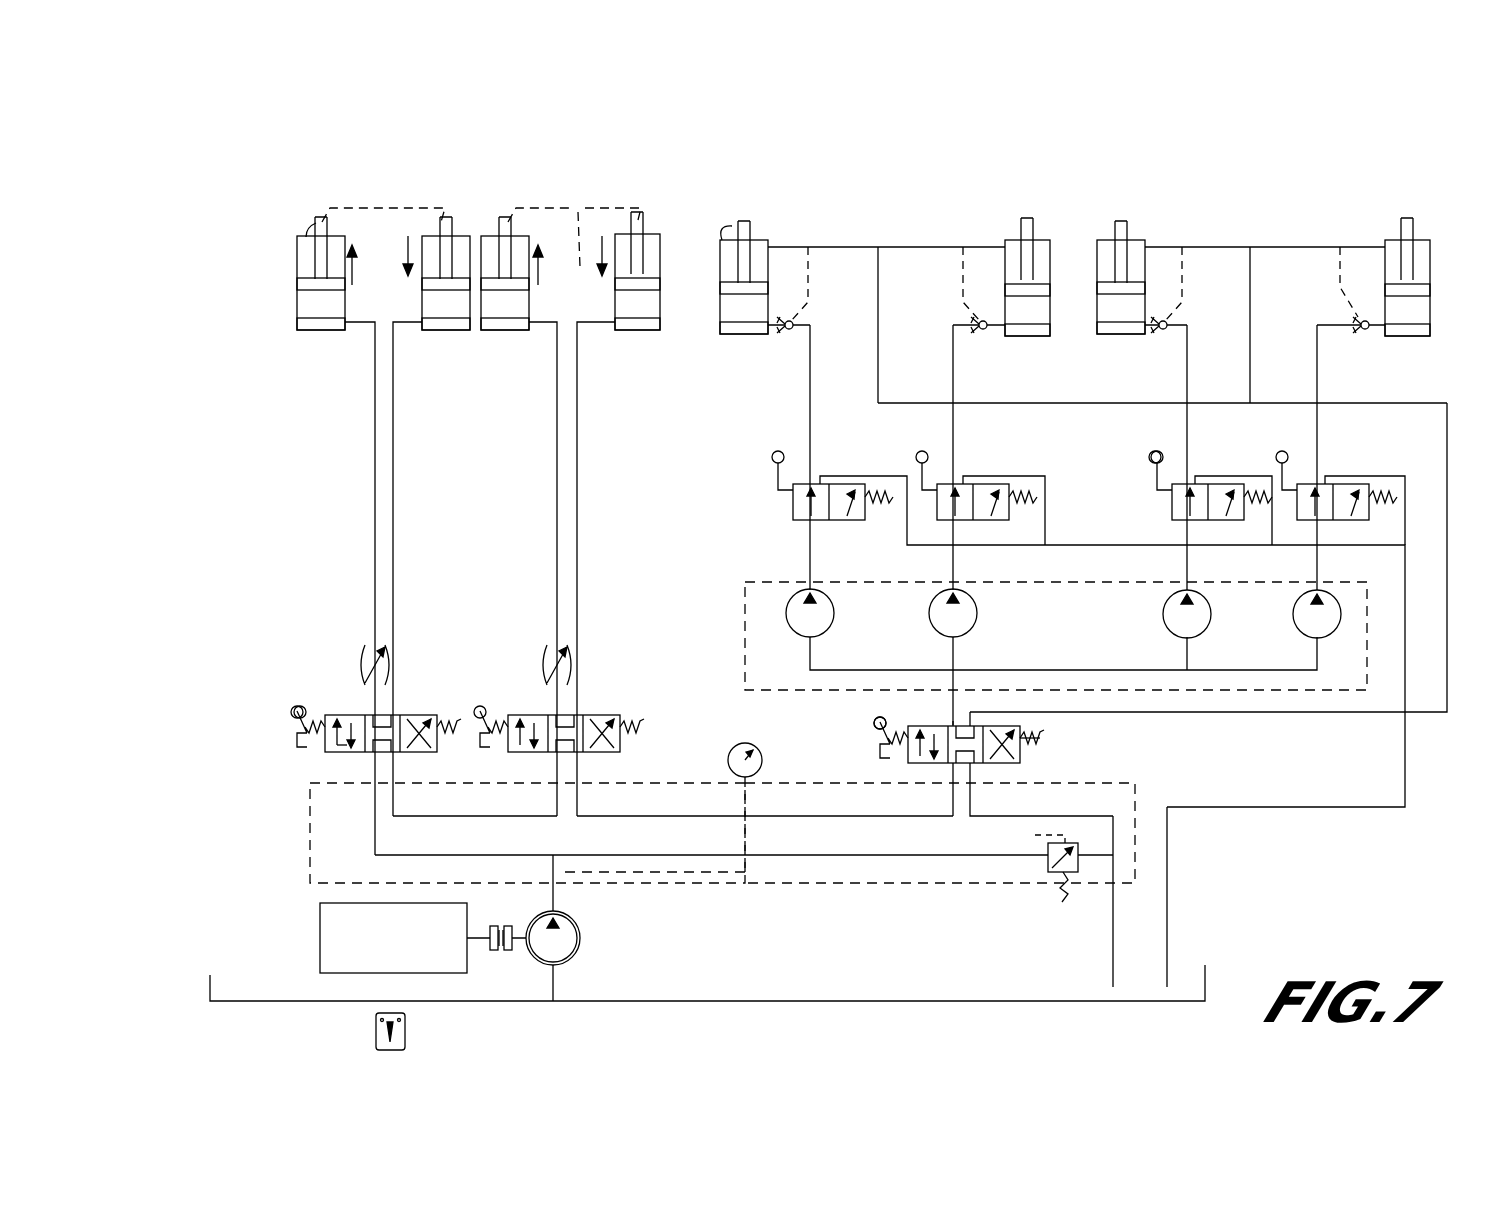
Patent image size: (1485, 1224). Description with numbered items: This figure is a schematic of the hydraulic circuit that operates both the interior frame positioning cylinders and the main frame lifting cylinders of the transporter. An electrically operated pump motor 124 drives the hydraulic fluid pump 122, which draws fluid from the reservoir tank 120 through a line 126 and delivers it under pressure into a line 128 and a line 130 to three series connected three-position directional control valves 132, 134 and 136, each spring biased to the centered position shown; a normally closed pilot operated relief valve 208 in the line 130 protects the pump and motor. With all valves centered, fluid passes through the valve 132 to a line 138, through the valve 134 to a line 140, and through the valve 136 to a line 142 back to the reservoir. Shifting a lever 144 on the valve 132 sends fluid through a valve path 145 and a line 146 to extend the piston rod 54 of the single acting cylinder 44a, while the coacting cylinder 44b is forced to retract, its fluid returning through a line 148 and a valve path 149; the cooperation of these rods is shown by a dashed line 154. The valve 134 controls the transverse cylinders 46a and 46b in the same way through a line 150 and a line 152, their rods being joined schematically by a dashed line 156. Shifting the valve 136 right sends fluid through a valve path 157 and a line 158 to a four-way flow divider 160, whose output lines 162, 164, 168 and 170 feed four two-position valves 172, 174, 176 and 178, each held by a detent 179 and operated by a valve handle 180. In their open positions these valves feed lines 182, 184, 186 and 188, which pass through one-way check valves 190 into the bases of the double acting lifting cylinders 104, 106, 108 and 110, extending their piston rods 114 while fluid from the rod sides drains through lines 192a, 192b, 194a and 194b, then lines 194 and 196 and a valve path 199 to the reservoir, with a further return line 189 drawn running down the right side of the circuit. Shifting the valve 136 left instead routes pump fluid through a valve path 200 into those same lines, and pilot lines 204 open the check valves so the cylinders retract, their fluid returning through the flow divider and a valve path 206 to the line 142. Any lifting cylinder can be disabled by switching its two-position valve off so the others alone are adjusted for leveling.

The piston rod 54 is at (308, 233).
The dashed line 154 is at (383, 222).
The interior frame positioning cylinder 44a is at (298, 326).
The interior frame positioning cylinder 44b is at (422, 314).
The interior frame positioning cylinder 46a is at (504, 332).
The interior frame positioning cylinder 46b is at (662, 320).
The dashed line 156 is at (574, 254).
The piston rod 114 is at (723, 230).
The main frame lifting cylinder 104 is at (727, 338).
The main frame lifting cylinder 106 is at (1027, 337).
The main frame lifting cylinder 108 is at (1110, 340).
The main frame lifting cylinder 110 is at (1410, 340).
The line 192a is at (855, 232).
The line 192b is at (908, 247).
The line 194a is at (1215, 228).
The line 194b is at (1318, 228).
The pilot line 204 is at (808, 283).
The one-way check valve 190 is at (792, 338).
The line 194 is at (878, 340).
The line 184 is at (953, 372).
The line 186 is at (1183, 383).
The line 188 is at (1313, 360).
The line 196 is at (1250, 323).
The line 182 is at (810, 430).
The hydraulic line 189 is at (1447, 712).
The 2-position valve 172 is at (845, 484).
The 2-position valve 174 is at (1014, 510).
The 2-position valve 176 is at (1162, 505).
The 2-position valve 178 is at (1337, 484).
The detent 179 is at (885, 484).
The valve handle 180 is at (1153, 470).
The 4-way flow divider 160 is at (1372, 690).
The line 162 is at (810, 558).
The line 164 is at (953, 563).
The line 168 is at (1187, 563).
The hydraulic pump 170 is at (1317, 563).
The 3-position directional control valve 136 is at (985, 725).
The line 158 is at (952, 720).
The valve path 157 is at (940, 741).
The valve path 199 is at (908, 766).
The valve path 200 is at (1022, 745).
The valve path 206 is at (1007, 760).
The line 146 is at (375, 482).
The line 148 is at (393, 490).
The line 150 is at (557, 543).
The line 152 is at (577, 480).
The valve path 145 is at (340, 732).
The 3-position directional control valve 132 is at (398, 715).
The 3-position directional control valve 134 is at (576, 715).
The lever 144 is at (310, 710).
The valve path 149 is at (523, 753).
The line 140 is at (698, 814).
The line 138 is at (490, 816).
The line 142 is at (965, 816).
The line 130 is at (372, 855).
The pilot operated relief valve 208 is at (1080, 854).
The pump motor 124 is at (320, 935).
The line 126 is at (553, 984).
The hydraulic fluid pump 122 is at (578, 949).
The line 128 is at (560, 896).
The hydraulic fluid reservoir tank 120 is at (206, 985).